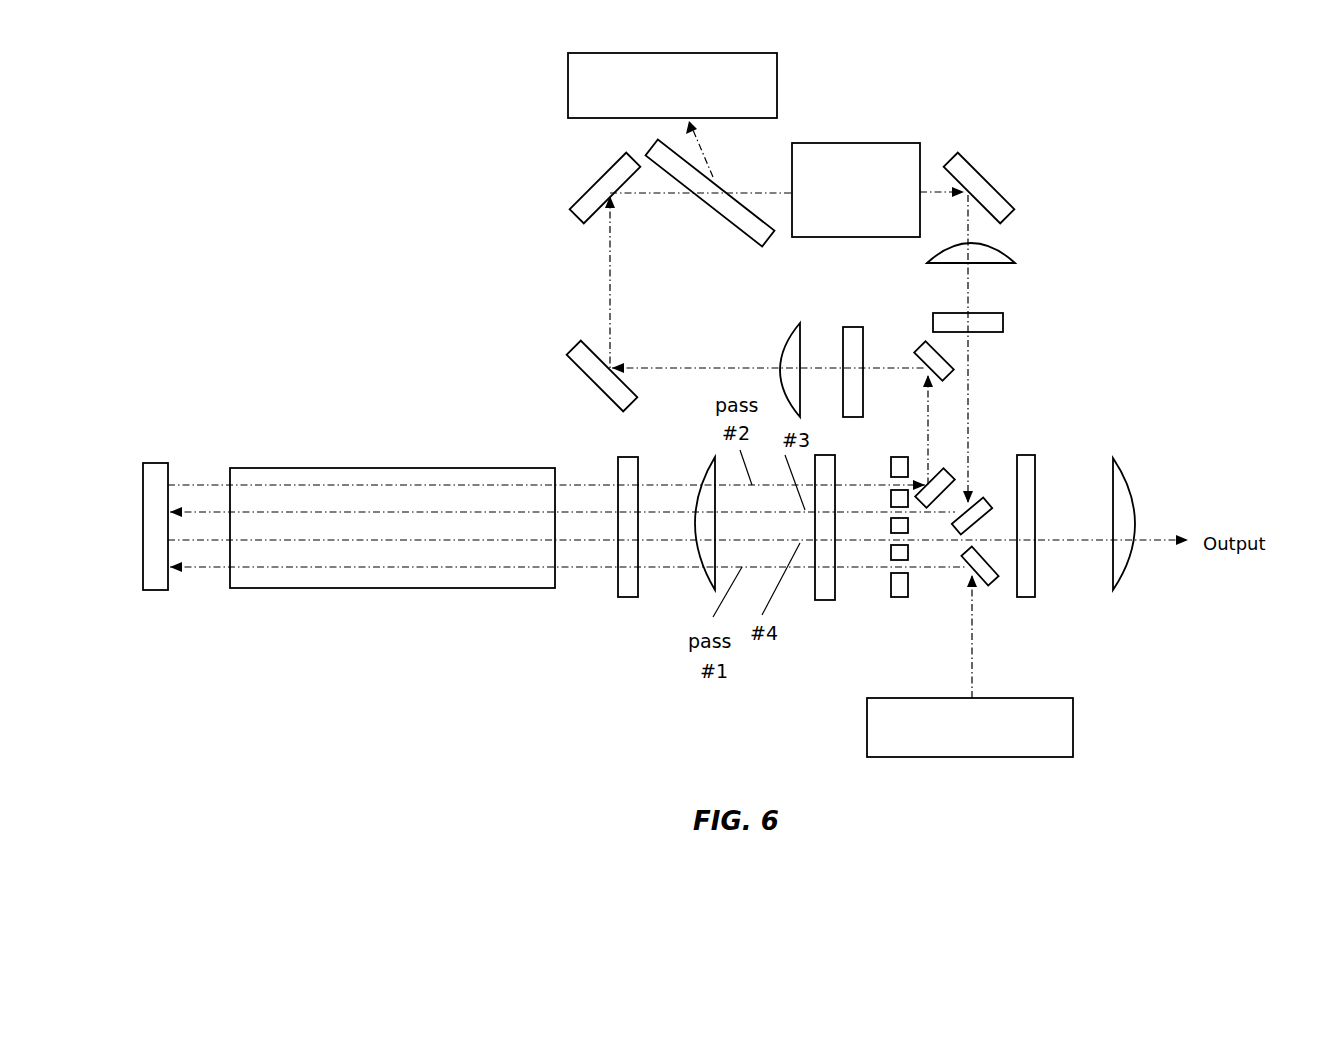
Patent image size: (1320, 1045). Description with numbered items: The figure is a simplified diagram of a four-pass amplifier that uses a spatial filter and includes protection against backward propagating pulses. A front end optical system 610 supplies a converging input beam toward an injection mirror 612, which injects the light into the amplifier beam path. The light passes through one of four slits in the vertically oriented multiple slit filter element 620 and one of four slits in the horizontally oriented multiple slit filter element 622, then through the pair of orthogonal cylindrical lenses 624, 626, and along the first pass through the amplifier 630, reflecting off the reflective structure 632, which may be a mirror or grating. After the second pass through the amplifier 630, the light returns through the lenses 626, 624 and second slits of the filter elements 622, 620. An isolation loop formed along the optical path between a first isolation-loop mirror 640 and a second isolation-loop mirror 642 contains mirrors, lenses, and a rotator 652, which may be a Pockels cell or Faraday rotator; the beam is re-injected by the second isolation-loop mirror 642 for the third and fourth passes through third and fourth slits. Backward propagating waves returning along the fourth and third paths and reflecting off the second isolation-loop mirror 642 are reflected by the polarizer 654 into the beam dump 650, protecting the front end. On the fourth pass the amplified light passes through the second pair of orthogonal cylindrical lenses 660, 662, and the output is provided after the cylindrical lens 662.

The front end optical system 610 is at (1032, 757).
The injection mirror 612 is at (987, 586).
The vertically oriented multiple slit filter element 620 is at (897, 598).
The horizontally oriented multiple slit filter element 622 is at (822, 600).
The cylindrical lens 624 is at (707, 458).
The cylindrical lens 626 is at (628, 597).
The amplifier 630 is at (370, 588).
The reflective structure 632 is at (152, 590).
The first isolation-loop mirror 640 is at (945, 467).
The second isolation-loop mirror 642 is at (985, 497).
The beam dump 650 is at (568, 80).
The rotator 652 is at (908, 143).
The polarizer 654 is at (742, 228).
The cylindrical lens 660 is at (1035, 500).
The cylindrical lens 662 is at (1118, 590).